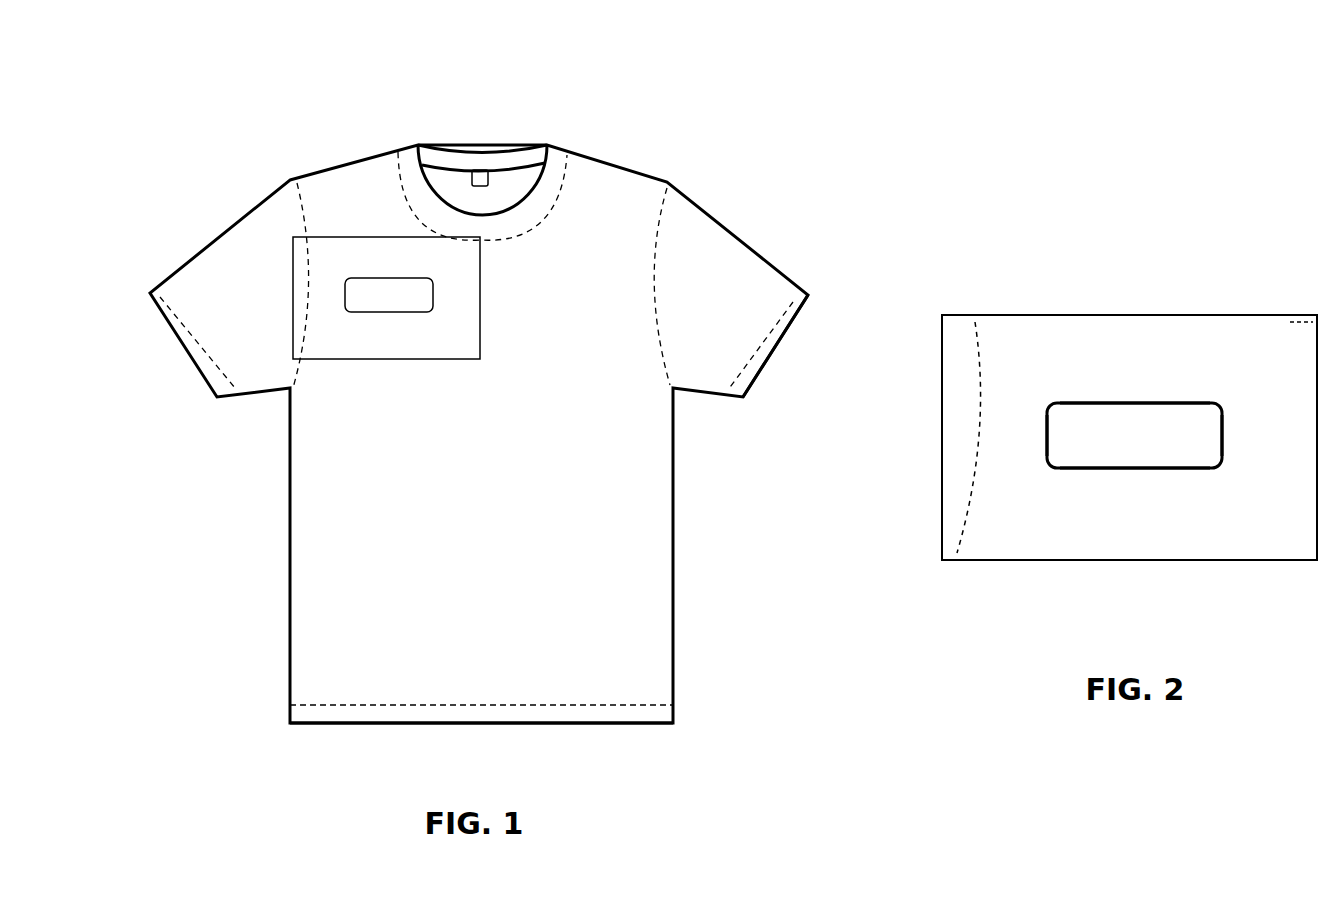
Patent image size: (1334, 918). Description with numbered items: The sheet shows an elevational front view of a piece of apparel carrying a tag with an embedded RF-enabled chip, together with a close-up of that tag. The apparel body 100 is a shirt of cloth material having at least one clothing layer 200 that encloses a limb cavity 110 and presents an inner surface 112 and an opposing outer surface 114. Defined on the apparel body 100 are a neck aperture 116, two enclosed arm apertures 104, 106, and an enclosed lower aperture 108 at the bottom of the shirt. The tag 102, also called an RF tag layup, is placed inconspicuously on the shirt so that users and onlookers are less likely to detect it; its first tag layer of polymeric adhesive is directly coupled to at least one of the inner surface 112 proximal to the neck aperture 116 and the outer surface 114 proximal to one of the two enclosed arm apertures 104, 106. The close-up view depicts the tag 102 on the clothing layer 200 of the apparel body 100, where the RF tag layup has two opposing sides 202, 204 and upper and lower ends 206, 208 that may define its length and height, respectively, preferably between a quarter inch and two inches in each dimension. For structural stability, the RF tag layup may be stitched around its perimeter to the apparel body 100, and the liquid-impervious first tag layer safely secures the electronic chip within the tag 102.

In FIG. 1, the apparel body 100 is at (677, 220).
In FIG. 1, the tag 102 is at (387, 265).
In FIG. 2, the tag 102 is at (1134, 435).
In FIG. 1, the enclosed arm aperture 104 is at (178, 361).
In FIG. 1, the enclosed arm aperture 106 is at (772, 364).
In FIG. 1, the enclosed lower aperture 108 is at (338, 730).
In FIG. 1, the limb cavity 110 is at (803, 314).
In FIG. 1, the inner surface 112 is at (447, 167).
In FIG. 1, the outer surface 114 is at (437, 383).
In FIG. 1, the neck aperture 116 is at (504, 137).
In FIG. 2, the clothing layer 200 is at (1129, 437).
In FIG. 2, the opposing side 202 is at (1035, 457).
In FIG. 2, the opposing side 204 is at (1235, 429).
In FIG. 2, the upper end 206 is at (1139, 391).
In FIG. 2, the lower end 208 is at (1171, 479).